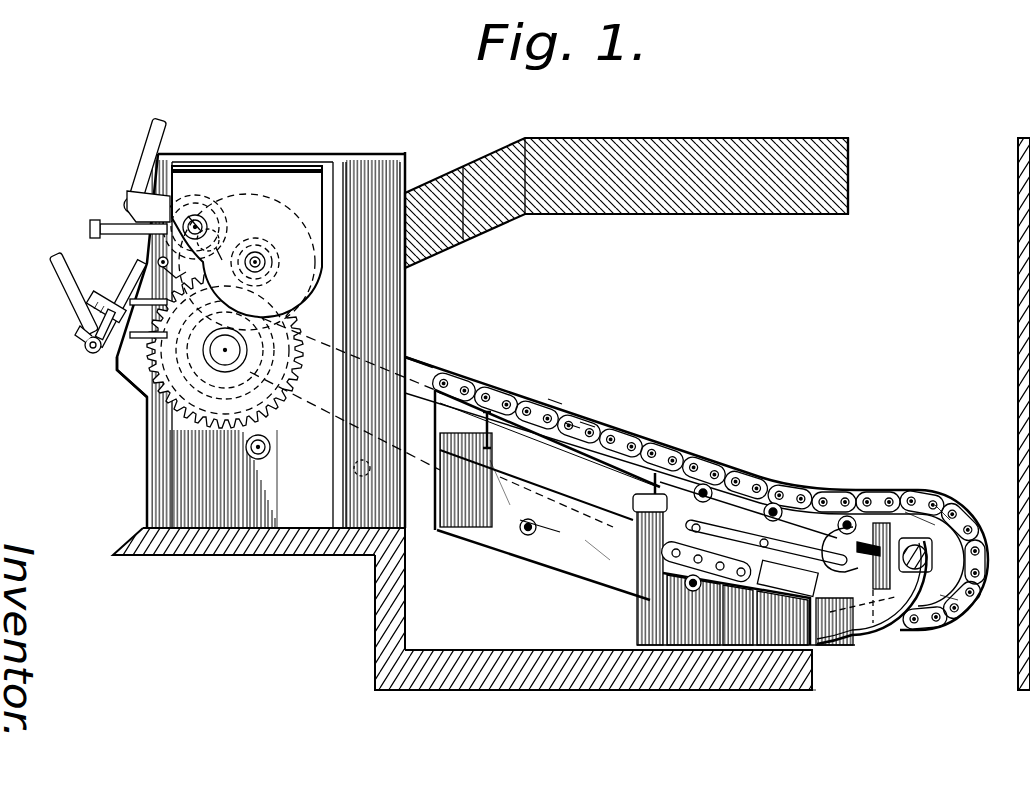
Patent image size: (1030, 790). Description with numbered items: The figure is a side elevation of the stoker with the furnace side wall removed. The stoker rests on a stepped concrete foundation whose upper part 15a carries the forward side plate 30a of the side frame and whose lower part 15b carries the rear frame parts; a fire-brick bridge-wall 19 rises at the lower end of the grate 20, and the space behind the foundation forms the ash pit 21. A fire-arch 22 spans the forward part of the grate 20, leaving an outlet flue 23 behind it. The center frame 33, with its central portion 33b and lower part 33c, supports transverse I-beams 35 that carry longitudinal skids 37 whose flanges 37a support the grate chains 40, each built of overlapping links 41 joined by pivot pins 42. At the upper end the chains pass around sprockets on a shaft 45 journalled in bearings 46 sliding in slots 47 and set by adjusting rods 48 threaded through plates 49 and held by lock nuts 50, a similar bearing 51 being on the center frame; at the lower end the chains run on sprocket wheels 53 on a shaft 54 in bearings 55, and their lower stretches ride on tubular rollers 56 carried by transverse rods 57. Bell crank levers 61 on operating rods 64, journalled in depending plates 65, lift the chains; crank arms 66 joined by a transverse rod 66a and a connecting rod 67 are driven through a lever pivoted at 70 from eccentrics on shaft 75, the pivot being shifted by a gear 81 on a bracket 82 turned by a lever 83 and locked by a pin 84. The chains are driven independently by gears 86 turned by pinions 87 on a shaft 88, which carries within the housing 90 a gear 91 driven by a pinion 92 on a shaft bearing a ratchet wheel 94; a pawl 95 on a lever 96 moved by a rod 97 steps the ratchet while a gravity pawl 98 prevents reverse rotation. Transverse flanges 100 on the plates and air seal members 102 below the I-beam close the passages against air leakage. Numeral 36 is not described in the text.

The upper part of the foundation 15a is at (233, 537).
The lower part of the foundation 15b is at (668, 655).
The fire-brick bridge-wall 19 is at (1018, 292).
The grate 20 is at (674, 436).
The ash pit 21 is at (873, 704).
The fire-arch 22 is at (662, 202).
The outlet flue 23 is at (880, 176).
The forward side plate of the side frame 30a is at (398, 298).
The center frame 33 is at (599, 565).
The central portion of the center frame 33b is at (500, 497).
The lower part of the center frame 33c is at (843, 630).
The transverse I-beam 35 is at (650, 483).
The block 36 is at (687, 592).
The skid 37 is at (592, 426).
The laterally extending flange of the skid 37a is at (477, 382).
The grate chain 40 is at (535, 388).
The link 41 is at (562, 410).
The pivot pin 42 is at (578, 428).
The shaft 45 is at (232, 355).
The bearing 46 is at (225, 360).
The slot 47 is at (123, 385).
The adjusting rod 48 is at (90, 305).
The plate 49 is at (140, 340).
The lock nut 50 is at (123, 303).
The bearing 51 is at (532, 538).
The sprocket wheel 53 is at (920, 527).
The shaft 54 is at (953, 597).
The bearing 55 is at (944, 515).
The tubular roller 56 is at (527, 538).
The transverse rod 57 is at (686, 588).
The bell crank lever 61 is at (855, 617).
The transverse operating rod 64 is at (852, 518).
The downwardly extending plate 65 is at (728, 498).
The crank arm 66 is at (702, 527).
The transverse rod 66a is at (634, 548).
The longitudinal connecting rod 67 is at (706, 556).
The pivot 70 is at (268, 458).
The shaft 75 is at (272, 449).
The gear 81 is at (90, 352).
The bracket 82 is at (106, 340).
The lever 83 is at (56, 277).
The pin 84 is at (84, 340).
The gear 86 is at (300, 381).
The pinion 87 is at (262, 268).
The shaft 88 is at (258, 255).
The housing 90 is at (278, 190).
The gear 91 is at (258, 185).
The pinion 92 is at (210, 226).
The ratchet wheel 94 is at (150, 233).
The pawl 95 is at (228, 200).
The lever 96 is at (165, 198).
The rod 97 is at (160, 132).
The gravity actuated pawl 98 is at (158, 262).
The transverse flange 100 is at (825, 522).
The air seal member 102 is at (787, 578).